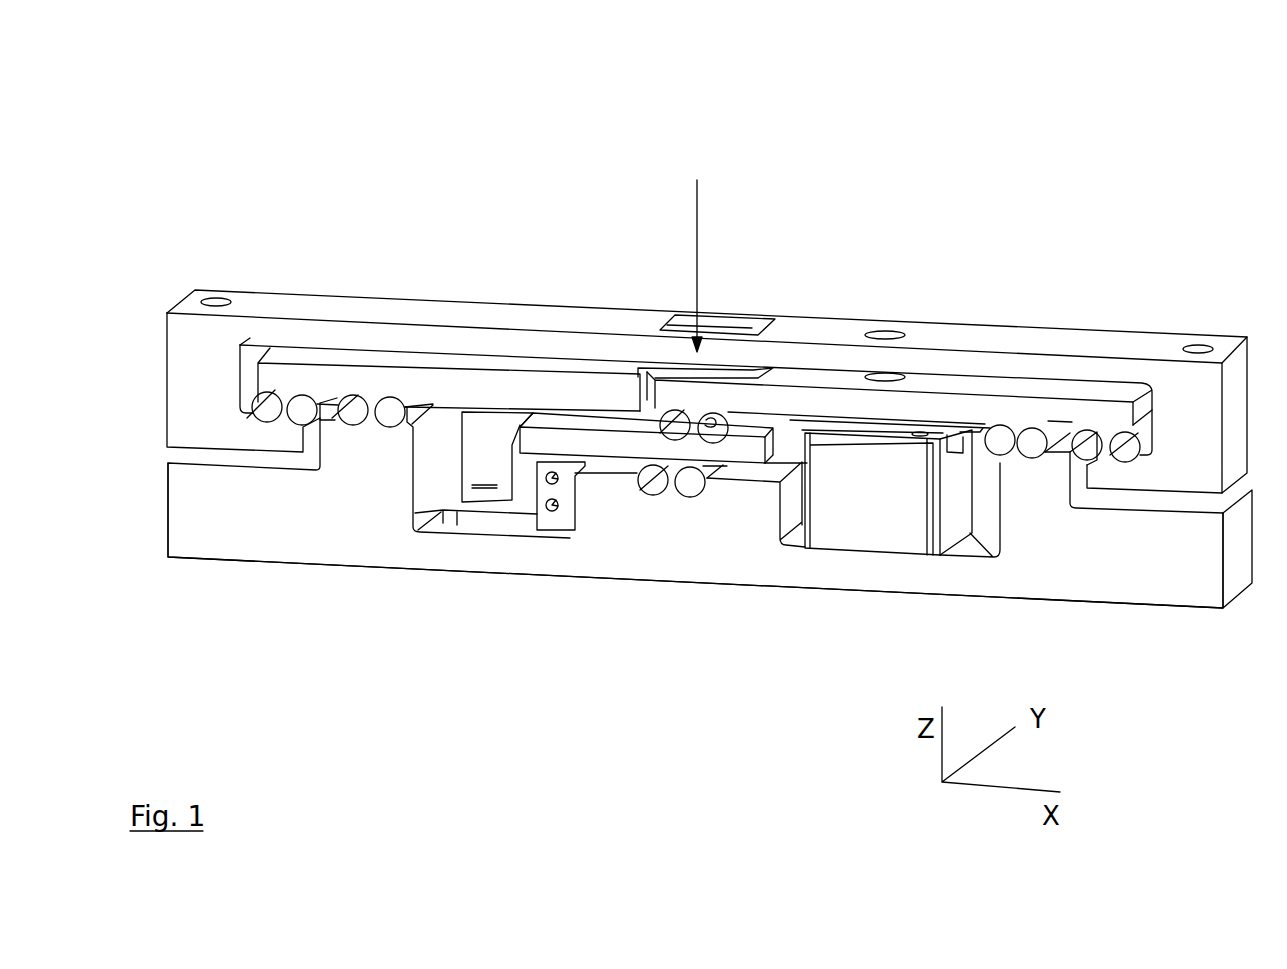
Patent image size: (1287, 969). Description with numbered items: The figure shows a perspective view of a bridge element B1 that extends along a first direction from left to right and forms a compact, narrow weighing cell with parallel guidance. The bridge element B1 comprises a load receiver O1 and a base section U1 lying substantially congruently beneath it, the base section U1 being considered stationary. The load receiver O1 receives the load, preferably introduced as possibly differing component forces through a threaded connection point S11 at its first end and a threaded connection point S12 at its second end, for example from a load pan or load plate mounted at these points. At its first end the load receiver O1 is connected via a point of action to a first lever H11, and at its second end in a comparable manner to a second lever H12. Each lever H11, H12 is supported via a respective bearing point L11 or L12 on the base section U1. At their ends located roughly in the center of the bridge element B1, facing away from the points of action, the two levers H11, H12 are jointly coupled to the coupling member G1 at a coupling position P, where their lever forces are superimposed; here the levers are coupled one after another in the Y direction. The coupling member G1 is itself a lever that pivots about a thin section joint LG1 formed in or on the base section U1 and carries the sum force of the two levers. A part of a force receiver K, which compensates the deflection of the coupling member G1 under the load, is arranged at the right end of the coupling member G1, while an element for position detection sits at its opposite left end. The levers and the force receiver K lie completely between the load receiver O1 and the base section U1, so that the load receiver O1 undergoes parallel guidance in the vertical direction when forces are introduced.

The bridge element B1 is at (217, 147).
The load receiver O1 is at (1008, 340).
The base section U1 is at (298, 543).
The first lever H11 is at (438, 390).
The second lever H12 is at (818, 402).
The bearing point L11 is at (383, 410).
The bearing point L12 is at (1037, 443).
The thin section joint LG1 is at (683, 482).
The coupling member G1 is at (620, 443).
The force receiver K is at (880, 527).
The threaded connection point S11 is at (215, 300).
The threaded connection point S12 is at (1196, 345).
The coupling position P is at (712, 255).